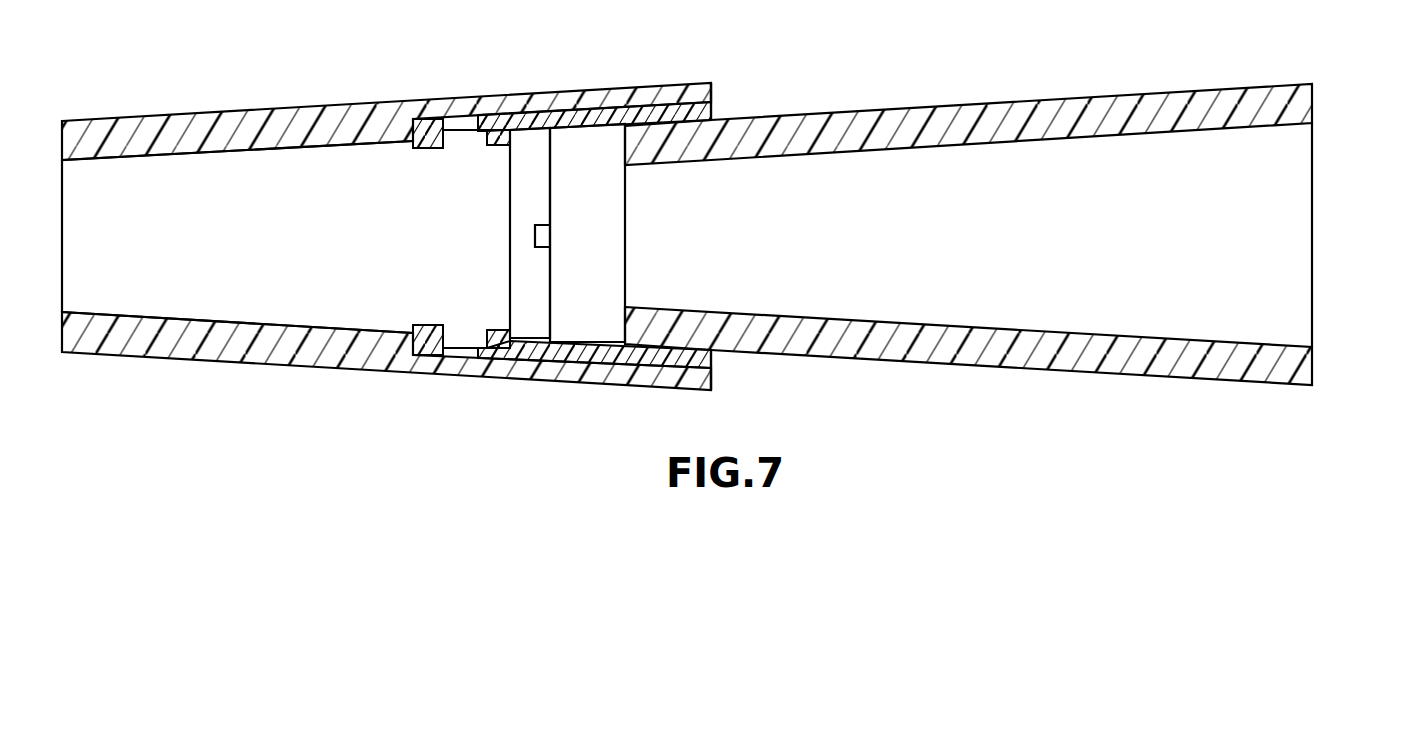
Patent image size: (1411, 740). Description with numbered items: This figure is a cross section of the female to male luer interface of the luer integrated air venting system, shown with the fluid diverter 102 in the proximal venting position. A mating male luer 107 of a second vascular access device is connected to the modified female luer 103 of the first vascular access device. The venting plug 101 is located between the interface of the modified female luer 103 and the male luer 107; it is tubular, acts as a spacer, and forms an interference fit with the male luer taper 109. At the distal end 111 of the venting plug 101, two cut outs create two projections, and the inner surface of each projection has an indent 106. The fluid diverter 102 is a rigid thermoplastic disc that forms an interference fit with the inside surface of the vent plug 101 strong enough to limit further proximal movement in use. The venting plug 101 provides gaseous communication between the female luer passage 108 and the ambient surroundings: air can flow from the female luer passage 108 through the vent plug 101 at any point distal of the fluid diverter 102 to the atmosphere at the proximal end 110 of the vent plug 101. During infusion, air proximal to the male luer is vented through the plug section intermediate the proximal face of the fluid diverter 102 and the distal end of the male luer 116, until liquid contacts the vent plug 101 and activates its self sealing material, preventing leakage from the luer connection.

The venting plug 101 is at (558, 356).
The fluid diverter 102 is at (538, 158).
The modified female luer 103 is at (166, 131).
The indent 106 is at (472, 138).
The male luer 107 is at (1308, 110).
The female luer passage 108 is at (252, 276).
The male luer taper 109 is at (1120, 98).
The proximal end of vent plug 110 is at (714, 112).
The distal end of venting plug 111 is at (430, 348).
The distal end of the male luer 116 is at (630, 257).